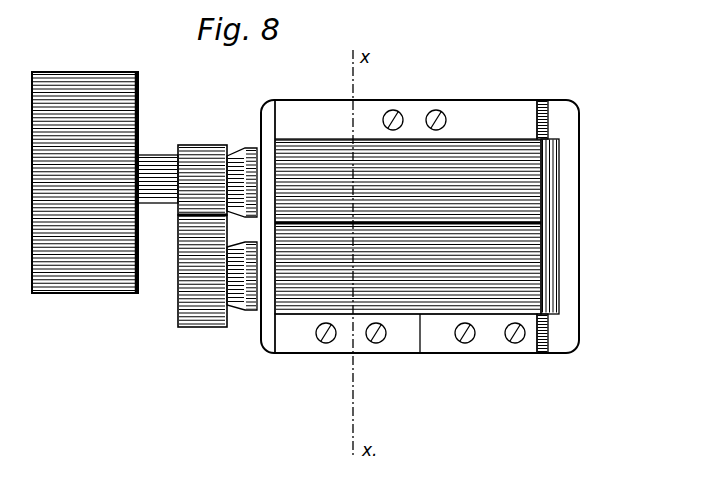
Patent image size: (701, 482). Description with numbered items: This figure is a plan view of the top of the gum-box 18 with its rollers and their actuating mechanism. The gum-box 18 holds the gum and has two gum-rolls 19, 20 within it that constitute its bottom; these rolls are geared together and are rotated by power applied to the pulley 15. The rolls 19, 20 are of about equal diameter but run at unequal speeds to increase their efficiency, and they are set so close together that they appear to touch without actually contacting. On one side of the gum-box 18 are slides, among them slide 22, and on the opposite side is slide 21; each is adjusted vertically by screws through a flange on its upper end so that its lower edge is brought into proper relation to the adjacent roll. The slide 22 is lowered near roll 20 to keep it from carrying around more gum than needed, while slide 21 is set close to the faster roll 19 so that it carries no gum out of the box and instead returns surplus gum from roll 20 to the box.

The pulley 15 is at (85, 182).
The gum-box 18 is at (579, 226).
The gum-roll 19 is at (408, 181).
The gum-roll 20 is at (408, 268).
The slide 21 is at (406, 119).
The slide 22 is at (406, 333).